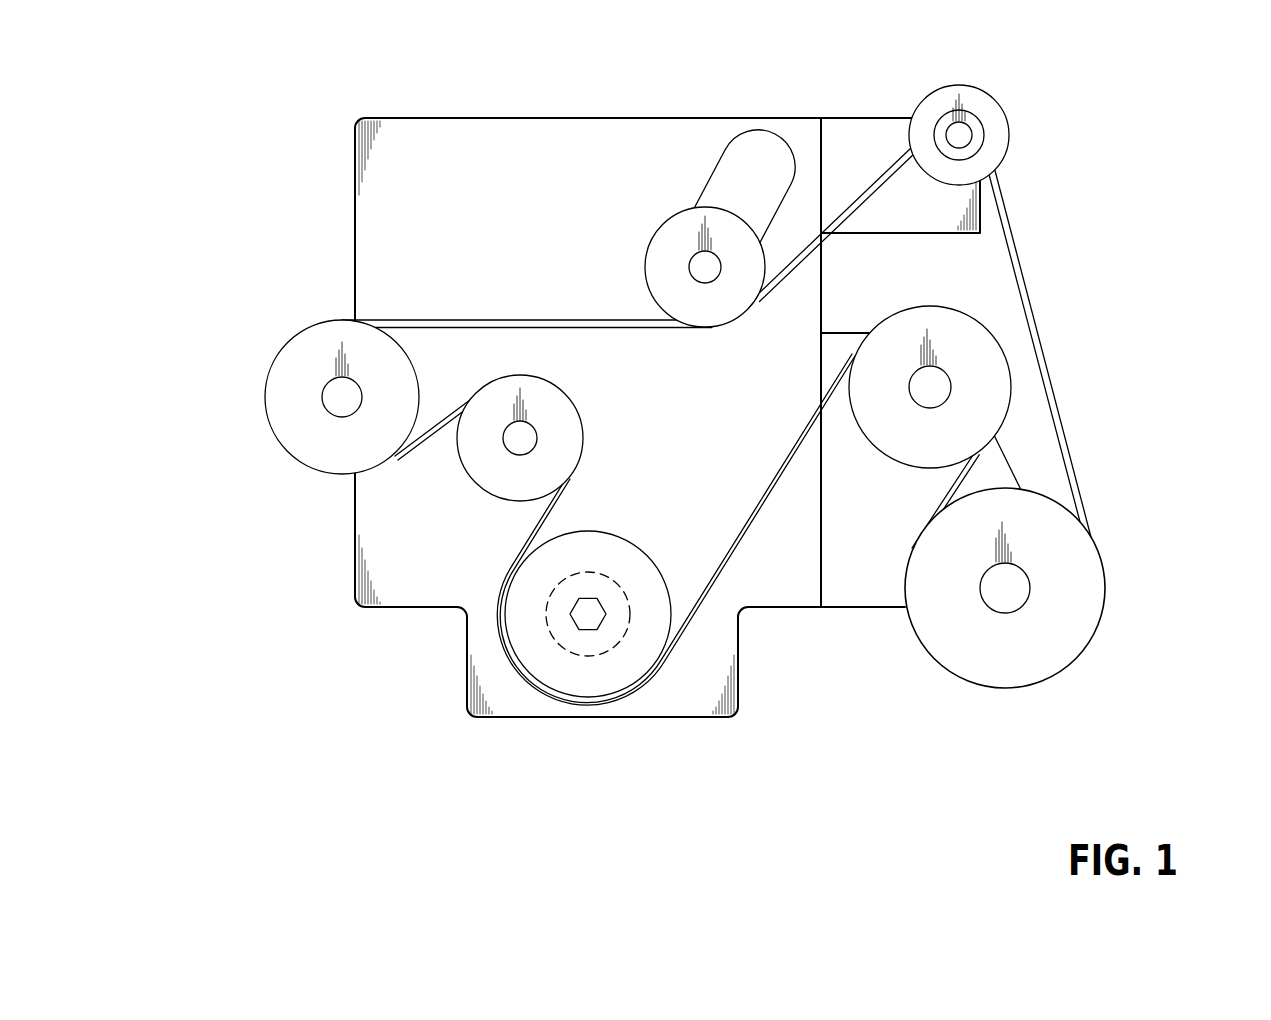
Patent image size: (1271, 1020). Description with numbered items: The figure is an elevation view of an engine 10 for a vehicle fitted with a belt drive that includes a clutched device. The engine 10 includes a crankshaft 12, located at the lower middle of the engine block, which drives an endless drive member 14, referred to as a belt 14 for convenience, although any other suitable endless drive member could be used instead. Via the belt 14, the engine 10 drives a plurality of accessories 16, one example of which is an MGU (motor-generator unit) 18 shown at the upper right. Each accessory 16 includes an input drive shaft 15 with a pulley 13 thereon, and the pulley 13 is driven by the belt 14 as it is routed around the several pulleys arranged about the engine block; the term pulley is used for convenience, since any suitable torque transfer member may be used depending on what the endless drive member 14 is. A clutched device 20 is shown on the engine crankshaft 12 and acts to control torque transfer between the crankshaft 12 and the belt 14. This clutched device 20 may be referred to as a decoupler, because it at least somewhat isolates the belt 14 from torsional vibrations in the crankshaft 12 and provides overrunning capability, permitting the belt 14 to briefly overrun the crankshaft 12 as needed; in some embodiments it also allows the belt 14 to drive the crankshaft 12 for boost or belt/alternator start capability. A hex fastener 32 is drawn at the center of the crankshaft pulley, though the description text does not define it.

The engine 10 is at (485, 648).
The crankshaft 12 is at (573, 653).
The pulley 13 is at (318, 460).
The belt 14 is at (430, 320).
The input drive shaft 15 is at (327, 378).
The accessories 16 is at (262, 444).
The MGU (motor-generator unit) 18 is at (940, 98).
The clutched device 20 is at (668, 592).
The hex bolt 32 is at (573, 627).